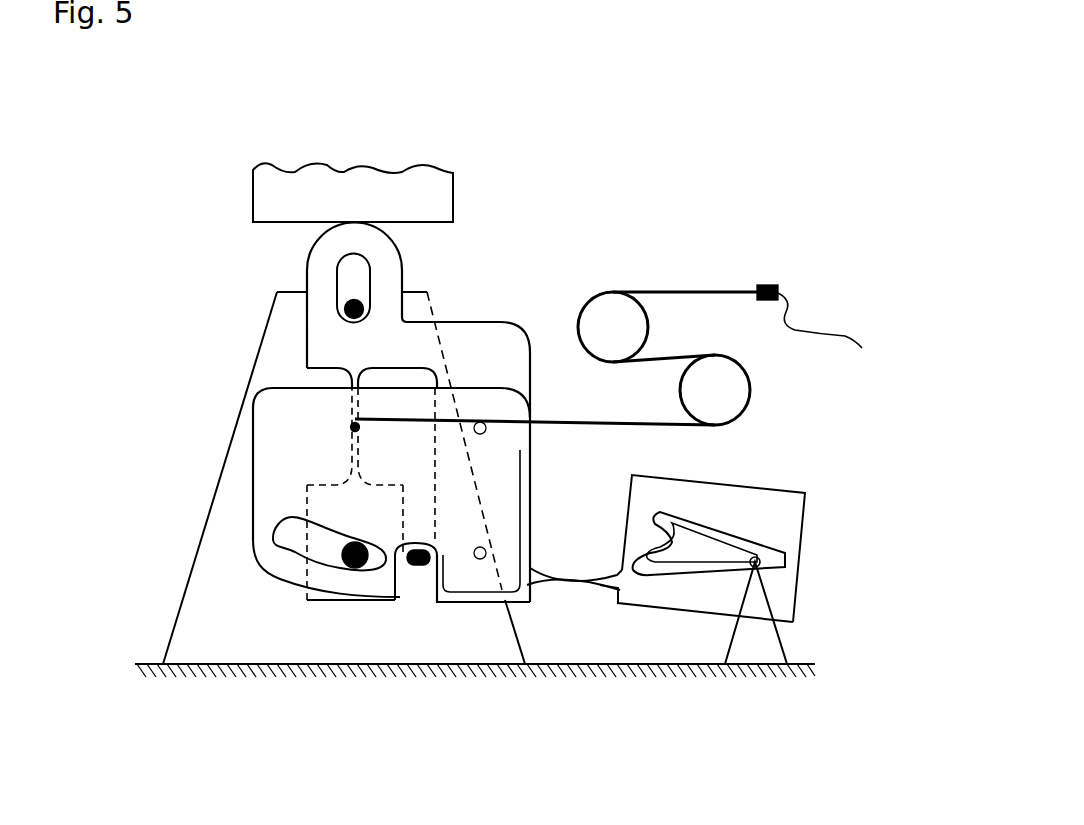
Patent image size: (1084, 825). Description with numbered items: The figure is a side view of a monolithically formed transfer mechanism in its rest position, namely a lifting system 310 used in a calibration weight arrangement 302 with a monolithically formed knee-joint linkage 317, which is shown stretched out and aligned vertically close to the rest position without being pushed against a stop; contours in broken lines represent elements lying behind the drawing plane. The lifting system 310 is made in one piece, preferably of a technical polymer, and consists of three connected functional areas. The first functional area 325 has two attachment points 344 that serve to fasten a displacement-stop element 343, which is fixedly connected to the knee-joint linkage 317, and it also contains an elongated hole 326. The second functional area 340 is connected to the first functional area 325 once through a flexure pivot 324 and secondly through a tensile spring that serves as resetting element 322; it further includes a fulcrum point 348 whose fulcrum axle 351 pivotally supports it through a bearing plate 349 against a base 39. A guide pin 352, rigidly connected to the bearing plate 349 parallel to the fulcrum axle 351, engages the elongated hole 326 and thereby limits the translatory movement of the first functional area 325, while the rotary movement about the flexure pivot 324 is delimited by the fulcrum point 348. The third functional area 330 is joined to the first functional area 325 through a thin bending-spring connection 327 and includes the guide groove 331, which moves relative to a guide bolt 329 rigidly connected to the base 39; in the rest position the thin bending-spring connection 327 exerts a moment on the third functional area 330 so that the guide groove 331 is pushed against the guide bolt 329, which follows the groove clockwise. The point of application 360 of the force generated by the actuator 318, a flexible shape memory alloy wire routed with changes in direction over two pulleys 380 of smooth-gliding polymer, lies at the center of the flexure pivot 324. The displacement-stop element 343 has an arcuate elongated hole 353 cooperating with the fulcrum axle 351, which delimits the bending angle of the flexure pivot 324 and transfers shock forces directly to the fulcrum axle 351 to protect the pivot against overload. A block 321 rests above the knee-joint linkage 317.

The base 39 is at (676, 688).
The calibration weight arrangement 302 is at (207, 178).
The lifting system 310 is at (748, 233).
The knee-joint linkage 317 is at (282, 450).
The actuator 318 is at (720, 291).
The coffee bean container 321 is at (420, 198).
The resetting element 322 is at (418, 565).
The flexure pivot 324 is at (352, 450).
The first functional area 325 is at (403, 413).
The elongated hole 326 is at (355, 268).
The thin bending-spring connection 327 is at (593, 583).
The guide bolt 329 is at (760, 565).
The third functional area 330 is at (768, 523).
The guide groove 331 is at (703, 532).
The second functional area 340 is at (317, 595).
The displacement-stop element 343 is at (391, 495).
The attachment points 344 is at (480, 553).
The fulcrum point 348 is at (332, 557).
The bearing plate 349 is at (228, 613).
The fulcrum axle 351 is at (355, 567).
The guide pin 352 is at (343, 309).
The arcuate elongated hole 353 is at (295, 537).
The point of application 360 is at (355, 427).
The pulleys 380 is at (612, 327).